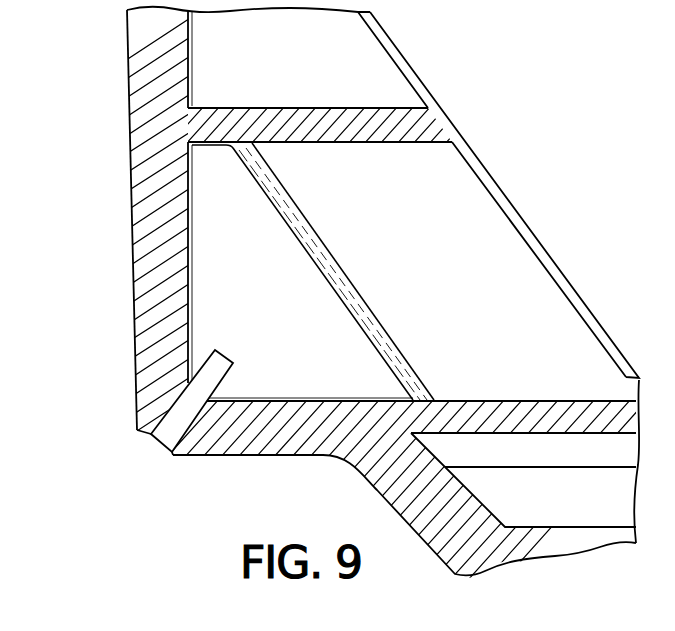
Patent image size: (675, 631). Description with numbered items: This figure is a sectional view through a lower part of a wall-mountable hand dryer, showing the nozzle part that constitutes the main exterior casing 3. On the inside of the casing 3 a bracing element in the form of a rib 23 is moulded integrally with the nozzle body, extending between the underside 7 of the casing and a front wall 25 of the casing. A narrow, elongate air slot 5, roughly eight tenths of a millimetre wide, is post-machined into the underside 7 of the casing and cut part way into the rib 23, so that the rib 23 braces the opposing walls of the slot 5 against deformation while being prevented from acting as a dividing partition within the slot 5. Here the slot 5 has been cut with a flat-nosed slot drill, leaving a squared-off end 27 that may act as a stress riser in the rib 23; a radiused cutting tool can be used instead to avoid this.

The main exterior casing 3 is at (131, 197).
The air slot 5 is at (158, 441).
The underside 7 is at (172, 456).
The rib 23 is at (328, 320).
The front wall 25 is at (147, 292).
The squared-off end 27 is at (224, 352).